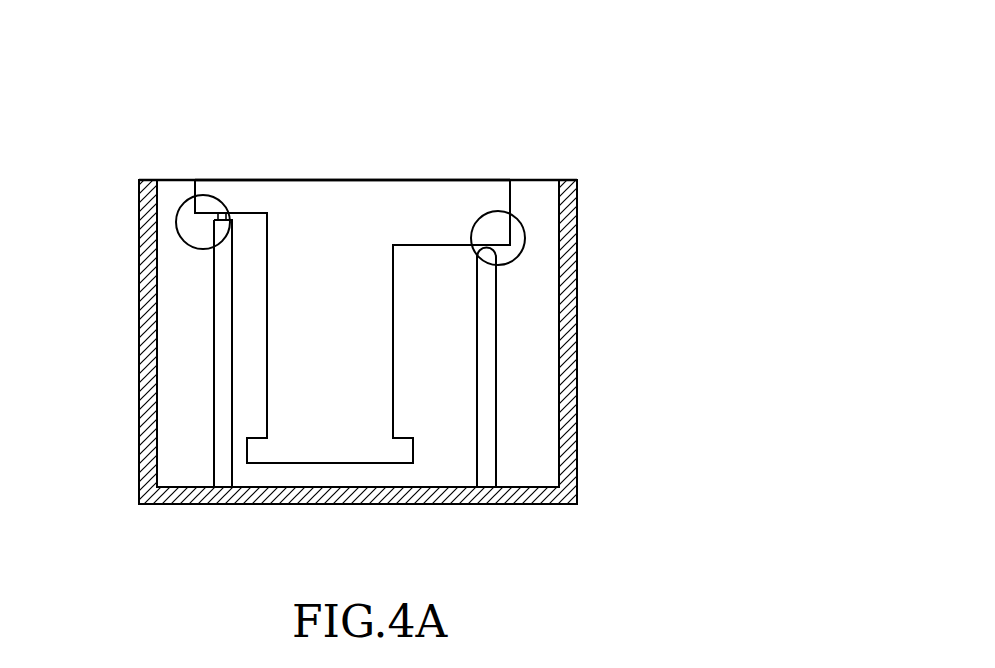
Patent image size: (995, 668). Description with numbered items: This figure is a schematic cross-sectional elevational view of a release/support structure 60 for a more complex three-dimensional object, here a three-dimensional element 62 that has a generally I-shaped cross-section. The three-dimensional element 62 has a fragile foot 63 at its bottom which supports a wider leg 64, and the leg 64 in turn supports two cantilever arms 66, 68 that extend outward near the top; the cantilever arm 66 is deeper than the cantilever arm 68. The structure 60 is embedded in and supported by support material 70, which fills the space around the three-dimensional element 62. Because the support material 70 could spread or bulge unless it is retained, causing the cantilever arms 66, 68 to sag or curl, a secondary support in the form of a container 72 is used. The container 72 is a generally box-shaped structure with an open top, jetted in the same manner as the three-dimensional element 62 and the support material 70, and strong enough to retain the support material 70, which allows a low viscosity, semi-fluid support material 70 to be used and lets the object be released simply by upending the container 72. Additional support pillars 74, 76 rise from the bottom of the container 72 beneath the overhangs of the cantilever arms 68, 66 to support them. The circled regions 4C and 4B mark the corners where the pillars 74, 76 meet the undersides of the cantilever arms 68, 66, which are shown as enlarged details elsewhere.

The release/support structure 60 is at (570, 52).
The 3-D element 62 is at (330, 195).
The foot 63 is at (402, 452).
The leg 64 is at (372, 417).
The cantilever arm 66 is at (476, 195).
The cantilever arm 68 is at (240, 195).
The support material 70 is at (540, 361).
The container 72 is at (567, 190).
The support pillar 74 is at (213, 368).
The support pillar 76 is at (496, 299).
The enlarged detail region 4B is at (525, 236).
The enlarged detail region 4C is at (177, 216).